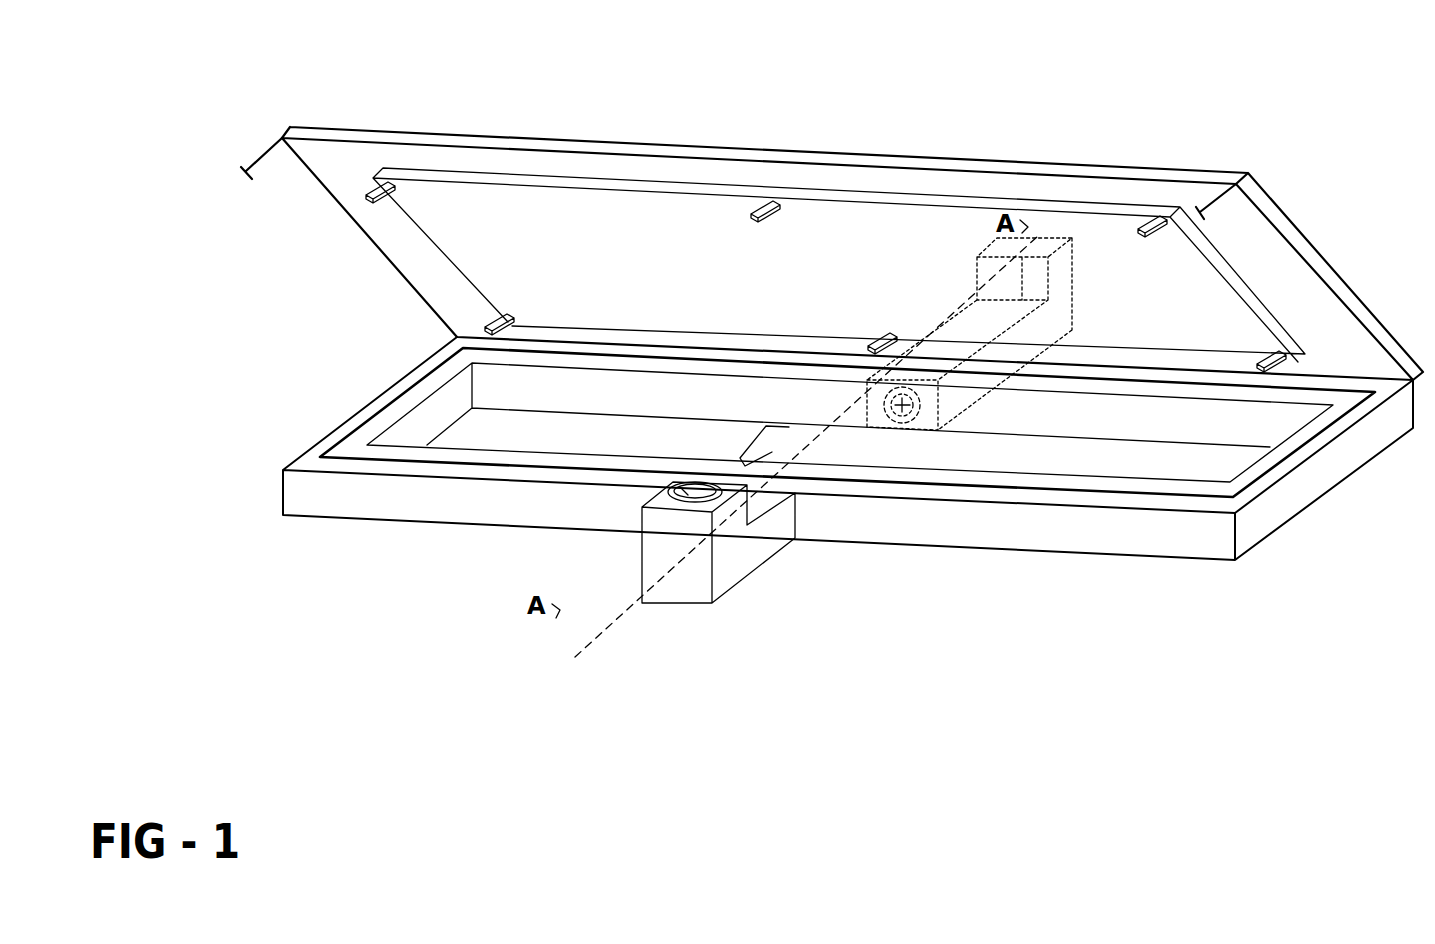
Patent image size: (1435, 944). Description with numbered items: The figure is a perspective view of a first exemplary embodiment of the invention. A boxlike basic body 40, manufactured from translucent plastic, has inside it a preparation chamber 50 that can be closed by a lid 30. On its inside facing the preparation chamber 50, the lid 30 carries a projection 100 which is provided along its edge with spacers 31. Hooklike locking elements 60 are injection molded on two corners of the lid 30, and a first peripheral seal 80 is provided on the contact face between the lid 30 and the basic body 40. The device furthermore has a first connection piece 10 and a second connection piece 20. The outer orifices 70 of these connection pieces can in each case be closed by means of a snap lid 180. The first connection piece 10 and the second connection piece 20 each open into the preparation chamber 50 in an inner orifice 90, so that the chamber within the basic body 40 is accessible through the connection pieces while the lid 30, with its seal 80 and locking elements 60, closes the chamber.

The first connection piece 10 is at (727, 570).
The second connection piece 20 is at (1065, 281).
The lid 30 is at (820, 152).
The spacers 31 is at (756, 208).
The basic body 40 is at (1197, 543).
The preparation chamber 50 is at (476, 432).
The hooklike locking elements 60 is at (246, 170).
The outer orifices 70 is at (648, 489).
The first peripheral seal 80 is at (318, 445).
The inner orifice 90 is at (920, 407).
The projection 100 is at (440, 172).
The snap lid 180 is at (789, 428).